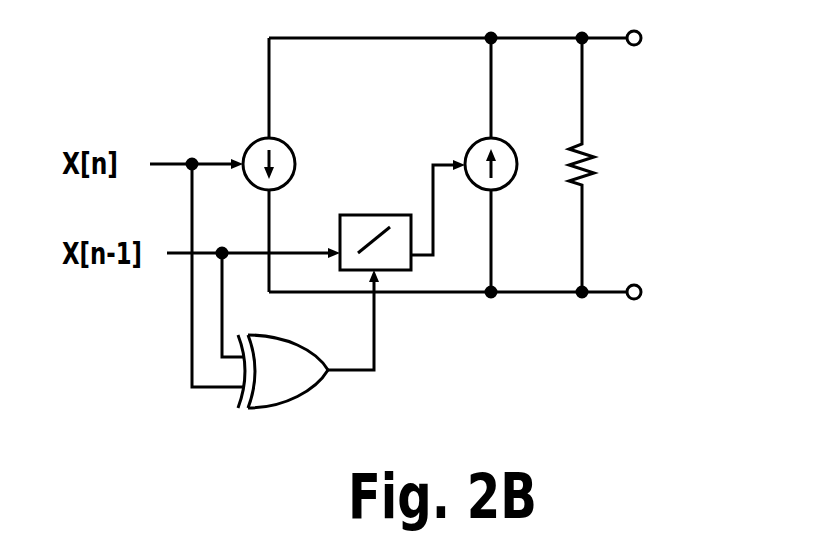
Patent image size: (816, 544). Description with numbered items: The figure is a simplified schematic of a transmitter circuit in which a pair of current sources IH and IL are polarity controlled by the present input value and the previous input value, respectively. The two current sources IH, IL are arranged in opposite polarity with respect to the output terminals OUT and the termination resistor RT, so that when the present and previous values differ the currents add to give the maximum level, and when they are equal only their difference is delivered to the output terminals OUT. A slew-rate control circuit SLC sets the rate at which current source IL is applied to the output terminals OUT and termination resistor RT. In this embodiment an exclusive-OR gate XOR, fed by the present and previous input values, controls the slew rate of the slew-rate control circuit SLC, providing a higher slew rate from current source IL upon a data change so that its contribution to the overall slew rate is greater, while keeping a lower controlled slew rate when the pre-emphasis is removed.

The current source IH is at (285, 164).
The current source IL is at (505, 164).
The termination resistor RT is at (600, 165).
The output terminals OUT is at (657, 67).
The slew-rate control circuit SLC is at (375, 215).
The exclusive-OR gate XOR is at (314, 348).